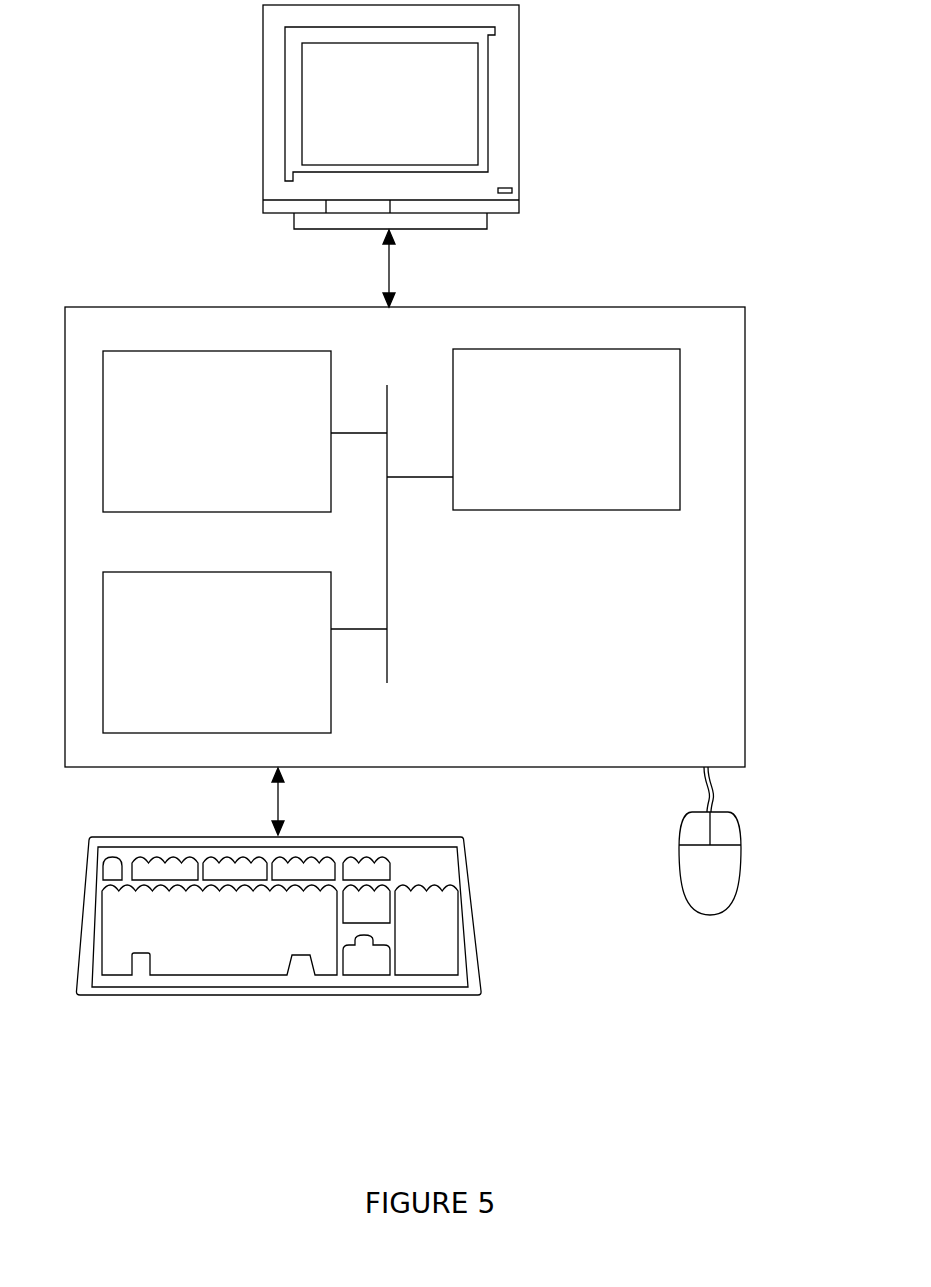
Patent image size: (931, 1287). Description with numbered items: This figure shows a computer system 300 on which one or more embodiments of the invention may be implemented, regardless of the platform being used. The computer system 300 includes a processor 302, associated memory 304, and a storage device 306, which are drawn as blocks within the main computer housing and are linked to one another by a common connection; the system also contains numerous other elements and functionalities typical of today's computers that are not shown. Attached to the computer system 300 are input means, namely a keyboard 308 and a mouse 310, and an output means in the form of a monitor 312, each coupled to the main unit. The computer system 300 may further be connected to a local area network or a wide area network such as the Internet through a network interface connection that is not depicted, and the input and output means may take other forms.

The computer system 300 is at (724, 174).
The processor 302 is at (563, 441).
The associated memory 304 is at (197, 442).
The storage device 306 is at (194, 662).
The keyboard 308 is at (190, 952).
The mouse 310 is at (689, 887).
The monitor 312 is at (367, 121).